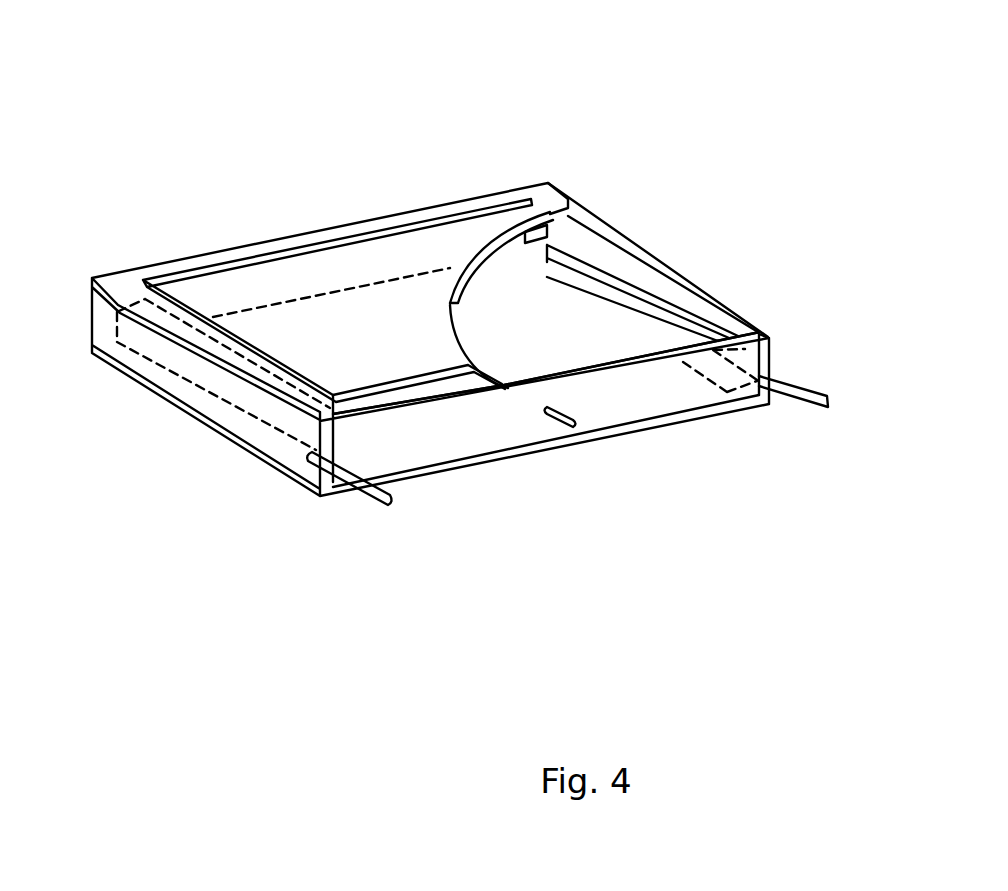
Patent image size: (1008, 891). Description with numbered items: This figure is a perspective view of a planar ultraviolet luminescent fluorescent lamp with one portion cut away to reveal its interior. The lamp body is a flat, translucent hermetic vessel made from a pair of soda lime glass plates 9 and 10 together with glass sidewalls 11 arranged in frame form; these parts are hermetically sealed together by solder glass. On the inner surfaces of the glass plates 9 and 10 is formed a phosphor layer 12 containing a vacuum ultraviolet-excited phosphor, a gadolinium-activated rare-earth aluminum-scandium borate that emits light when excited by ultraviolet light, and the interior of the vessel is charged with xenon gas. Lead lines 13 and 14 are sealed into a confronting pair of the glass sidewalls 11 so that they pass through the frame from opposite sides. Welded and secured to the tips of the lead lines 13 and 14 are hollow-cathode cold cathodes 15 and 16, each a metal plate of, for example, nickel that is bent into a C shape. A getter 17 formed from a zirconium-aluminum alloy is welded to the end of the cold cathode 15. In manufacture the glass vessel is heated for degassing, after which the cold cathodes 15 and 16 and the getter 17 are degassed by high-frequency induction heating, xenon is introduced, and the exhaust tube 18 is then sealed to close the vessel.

The glass plate 9 is at (543, 187).
The glass plate 10 is at (647, 430).
The glass sidewalls 11 is at (108, 337).
The phosphor layer 12 is at (494, 278).
The lead line 13 is at (826, 408).
The lead line 14 is at (389, 505).
The cold cathode 15 is at (620, 284).
The cold cathode 16 is at (230, 396).
The getter 17 is at (570, 207).
The exhaust tube 18 is at (564, 428).